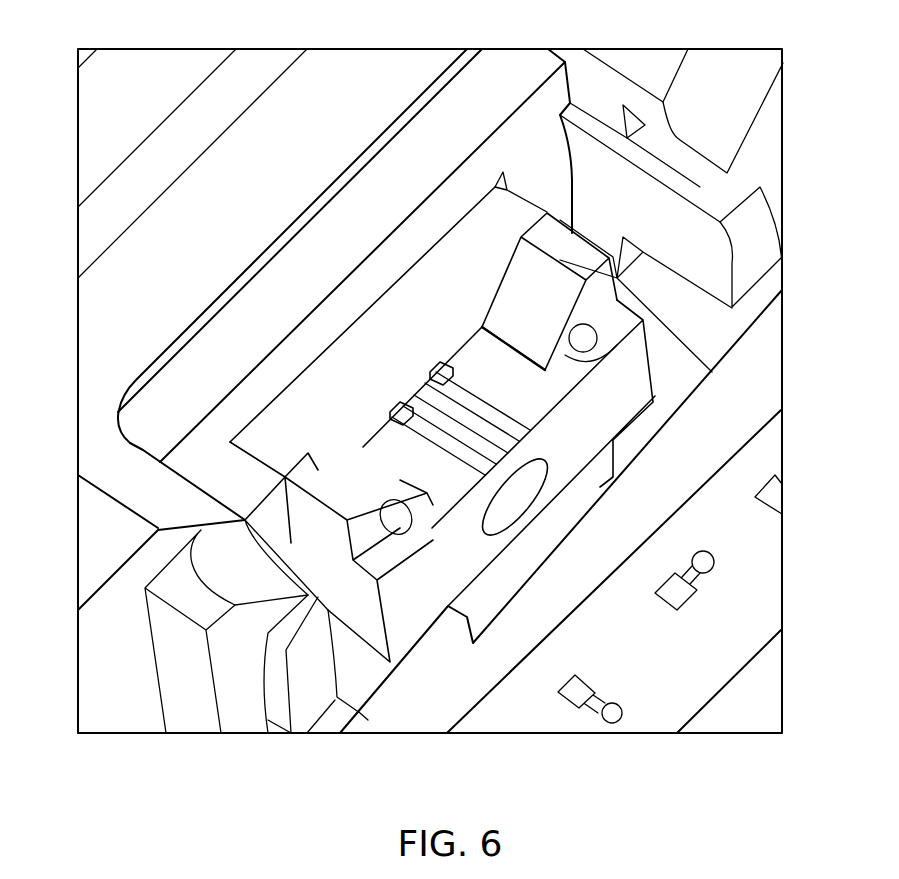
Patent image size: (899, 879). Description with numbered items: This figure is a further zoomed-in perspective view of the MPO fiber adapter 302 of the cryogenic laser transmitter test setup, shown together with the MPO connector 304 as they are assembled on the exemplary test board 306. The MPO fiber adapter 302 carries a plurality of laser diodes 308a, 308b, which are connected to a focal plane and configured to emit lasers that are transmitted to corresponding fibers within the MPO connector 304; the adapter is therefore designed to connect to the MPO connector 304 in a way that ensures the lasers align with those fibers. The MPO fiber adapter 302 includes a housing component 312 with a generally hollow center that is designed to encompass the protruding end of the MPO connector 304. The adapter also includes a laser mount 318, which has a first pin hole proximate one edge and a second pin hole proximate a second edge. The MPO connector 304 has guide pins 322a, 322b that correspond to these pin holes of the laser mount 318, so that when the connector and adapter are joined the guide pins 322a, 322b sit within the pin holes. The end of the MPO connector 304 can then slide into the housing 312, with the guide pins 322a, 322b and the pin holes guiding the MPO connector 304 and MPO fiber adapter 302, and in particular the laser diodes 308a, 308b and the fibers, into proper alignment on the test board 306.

The MPO fiber adapter 302 is at (385, 60).
The MPO connector 304 is at (176, 370).
The test board 306 is at (772, 620).
The laser diode 308a is at (395, 413).
The laser diode 308b is at (450, 377).
The housing component 312 is at (95, 433).
The laser mount 318 is at (555, 455).
The guide pin 322a is at (400, 527).
The guide pin 322b is at (577, 338).